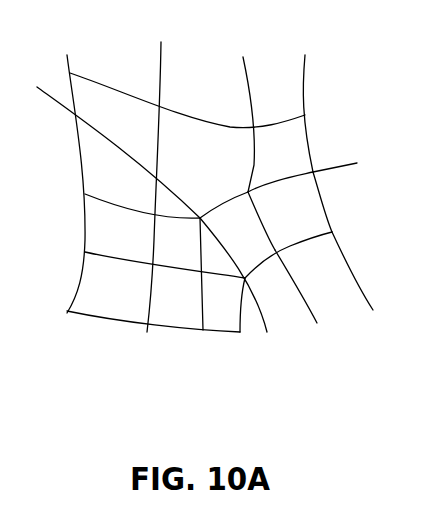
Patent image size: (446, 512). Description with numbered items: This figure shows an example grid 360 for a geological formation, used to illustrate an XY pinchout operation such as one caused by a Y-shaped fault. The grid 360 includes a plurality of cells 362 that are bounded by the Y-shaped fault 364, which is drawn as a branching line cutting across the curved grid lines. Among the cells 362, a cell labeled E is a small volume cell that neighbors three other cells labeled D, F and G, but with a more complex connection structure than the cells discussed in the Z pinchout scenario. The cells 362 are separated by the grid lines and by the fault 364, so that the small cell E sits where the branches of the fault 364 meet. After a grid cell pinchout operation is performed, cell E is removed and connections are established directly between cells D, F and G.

The grid 360 is at (57, 80).
The cells 362 is at (308, 222).
The Y-shaped fault 364 is at (247, 190).